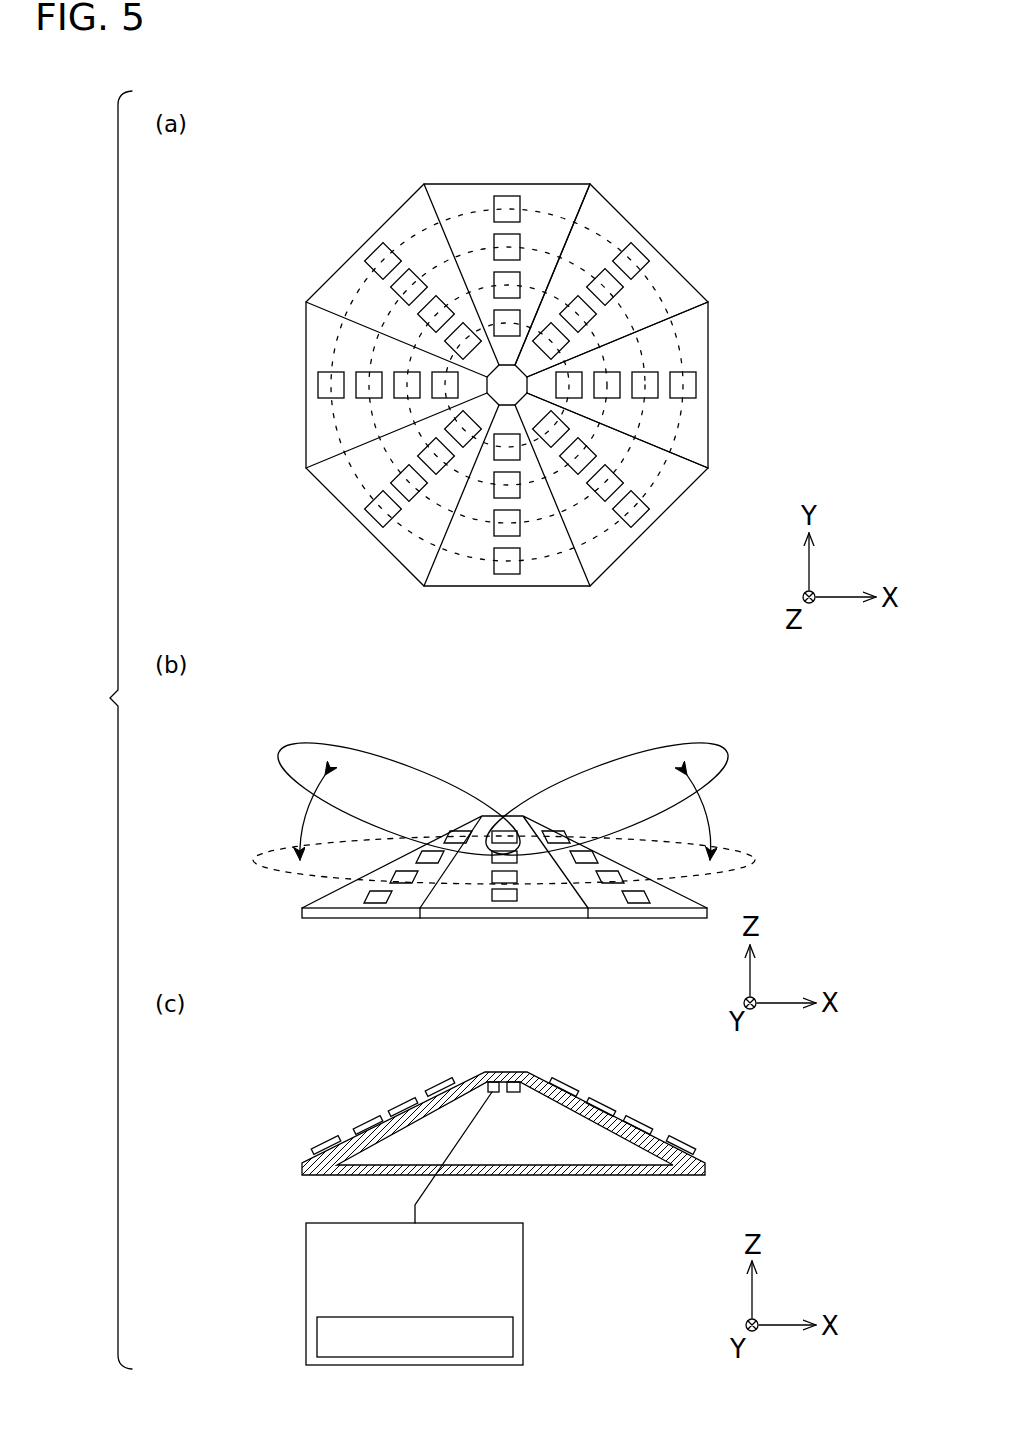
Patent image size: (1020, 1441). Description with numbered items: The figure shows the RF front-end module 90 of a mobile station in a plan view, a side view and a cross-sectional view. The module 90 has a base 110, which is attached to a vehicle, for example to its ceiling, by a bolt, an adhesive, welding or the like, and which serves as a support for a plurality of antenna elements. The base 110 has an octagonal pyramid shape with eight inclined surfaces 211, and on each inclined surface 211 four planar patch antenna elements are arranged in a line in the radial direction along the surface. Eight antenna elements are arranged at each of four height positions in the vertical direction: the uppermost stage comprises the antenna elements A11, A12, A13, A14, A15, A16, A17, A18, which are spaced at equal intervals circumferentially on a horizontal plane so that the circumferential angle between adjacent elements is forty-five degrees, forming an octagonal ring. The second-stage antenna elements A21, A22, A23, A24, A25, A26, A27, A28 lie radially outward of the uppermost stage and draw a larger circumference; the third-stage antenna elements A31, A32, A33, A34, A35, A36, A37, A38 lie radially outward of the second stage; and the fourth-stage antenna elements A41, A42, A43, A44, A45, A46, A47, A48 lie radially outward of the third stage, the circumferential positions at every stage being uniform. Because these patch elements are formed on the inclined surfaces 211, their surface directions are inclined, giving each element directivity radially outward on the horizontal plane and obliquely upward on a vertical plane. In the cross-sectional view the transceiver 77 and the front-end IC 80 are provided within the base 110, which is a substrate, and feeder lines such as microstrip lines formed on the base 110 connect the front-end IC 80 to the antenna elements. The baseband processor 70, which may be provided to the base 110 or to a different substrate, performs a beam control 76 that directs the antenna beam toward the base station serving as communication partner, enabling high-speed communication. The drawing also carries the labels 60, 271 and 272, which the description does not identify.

The antenna module 60 is at (308, 1077).
The baseband processor 70 is at (306, 1278).
The beam control 76 is at (513, 1337).
The transceiver 77 is at (491, 1081).
The front-end IC 80 is at (514, 1093).
The RF front-end module 90 is at (450, 164).
The base 110 is at (677, 264).
The inclined surface 211 is at (560, 193).
The beam 271 is at (730, 752).
The beam scanning range 272 is at (755, 840).
The antenna element A11 is at (520, 311).
The antenna element A21 is at (520, 284).
The antenna element A31 is at (518, 240).
The antenna element A41 is at (503, 197).
The antenna element A12 is at (566, 352).
The antenna element A22 is at (578, 314).
The antenna element A32 is at (605, 287).
The antenna element A42 is at (631, 261).
The antenna element A13 is at (582, 382).
The antenna element A23 is at (603, 1104).
The antenna element A33 is at (640, 1122).
The antenna element A43 is at (697, 386).
The antenna element A14 is at (566, 432).
The antenna element A24 is at (590, 458).
The antenna element A34 is at (618, 486).
The antenna element A44 is at (643, 513).
The antenna element A15 is at (500, 458).
The antenna element A25 is at (518, 491).
The antenna element A35 is at (519, 529).
The antenna element A45 is at (500, 569).
The antenna element A16 is at (448, 432).
The antenna element A26 is at (420, 455).
The antenna element A36 is at (400, 492).
The antenna element A46 is at (375, 512).
The antenna element A17 is at (438, 373).
The antenna element A27 is at (403, 1104).
The antenna element A37 is at (368, 1122).
The antenna element A47 is at (327, 1142).
The antenna element A18 is at (458, 330).
The antenna element A28 is at (430, 298).
The antenna element A38 is at (390, 285).
The antenna element A48 is at (374, 254).